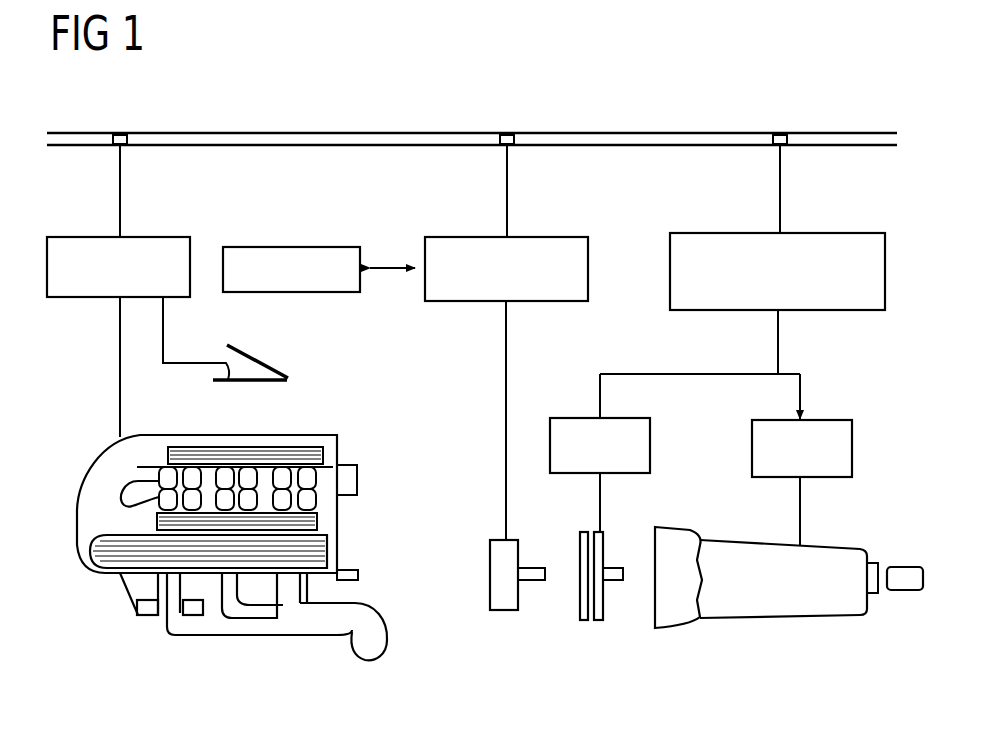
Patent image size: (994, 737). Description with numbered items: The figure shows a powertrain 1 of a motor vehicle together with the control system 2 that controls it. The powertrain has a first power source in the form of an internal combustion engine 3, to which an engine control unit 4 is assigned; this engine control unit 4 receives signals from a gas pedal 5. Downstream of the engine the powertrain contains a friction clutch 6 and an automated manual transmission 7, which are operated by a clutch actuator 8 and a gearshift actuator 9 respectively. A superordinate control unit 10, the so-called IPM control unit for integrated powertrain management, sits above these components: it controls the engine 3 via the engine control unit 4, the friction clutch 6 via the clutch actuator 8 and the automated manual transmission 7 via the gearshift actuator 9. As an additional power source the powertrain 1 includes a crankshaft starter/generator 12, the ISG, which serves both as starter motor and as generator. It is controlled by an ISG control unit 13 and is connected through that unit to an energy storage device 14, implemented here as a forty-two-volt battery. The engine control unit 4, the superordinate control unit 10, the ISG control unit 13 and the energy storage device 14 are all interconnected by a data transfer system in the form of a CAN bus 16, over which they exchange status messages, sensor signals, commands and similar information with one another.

The powertrain 1 is at (100, 602).
The control system 2 is at (632, 113).
The internal combustion engine 3 is at (303, 435).
The engine control unit 4 is at (162, 237).
The gas pedal 5 is at (262, 358).
The friction clutch 6 is at (588, 622).
The automated manual transmission 7 is at (750, 608).
The clutch actuator 8 is at (650, 445).
The gearshift actuator 9 is at (852, 450).
The superordinate control unit 10 is at (838, 233).
The crankshaft starter/generator 12 is at (503, 612).
The ISG control unit 13 is at (558, 237).
The energy storage device 14 is at (298, 247).
The CAN bus 16 is at (385, 133).